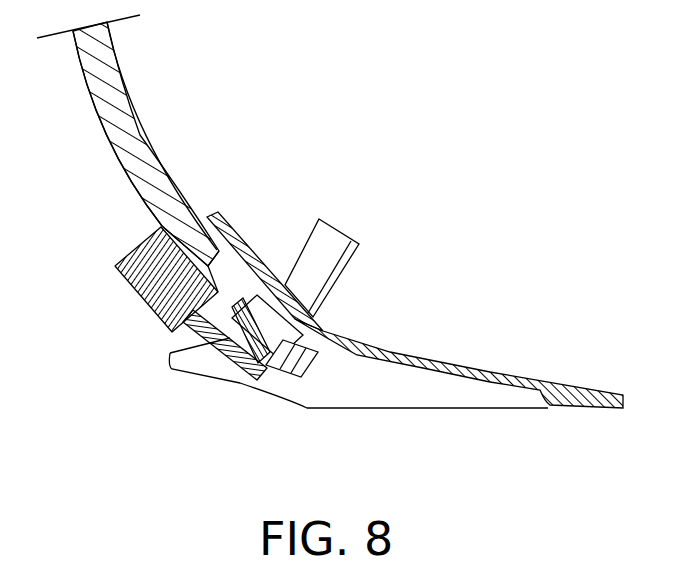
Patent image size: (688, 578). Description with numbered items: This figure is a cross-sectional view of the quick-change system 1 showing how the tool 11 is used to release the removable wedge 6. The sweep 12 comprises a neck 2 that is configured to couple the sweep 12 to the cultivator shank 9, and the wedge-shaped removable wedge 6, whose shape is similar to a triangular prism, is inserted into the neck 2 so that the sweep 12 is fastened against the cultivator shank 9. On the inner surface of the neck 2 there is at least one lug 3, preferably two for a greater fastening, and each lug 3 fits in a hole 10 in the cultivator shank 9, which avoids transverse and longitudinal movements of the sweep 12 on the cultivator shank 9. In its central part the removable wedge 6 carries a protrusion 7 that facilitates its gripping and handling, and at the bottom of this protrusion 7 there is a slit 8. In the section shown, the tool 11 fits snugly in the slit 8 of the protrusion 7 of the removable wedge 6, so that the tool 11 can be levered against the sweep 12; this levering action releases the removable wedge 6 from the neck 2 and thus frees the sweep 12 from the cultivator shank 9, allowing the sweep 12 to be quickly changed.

The quick-change system 1 is at (275, 188).
The neck 2 is at (218, 243).
The lug 3 is at (218, 268).
The removable wedge 6 is at (112, 241).
The protrusion 7 is at (155, 283).
The slit 8 is at (190, 335).
The cultivator shank 9 is at (133, 100).
The hole 10 is at (217, 267).
The tool 11 is at (325, 258).
The sweep 12 is at (495, 370).